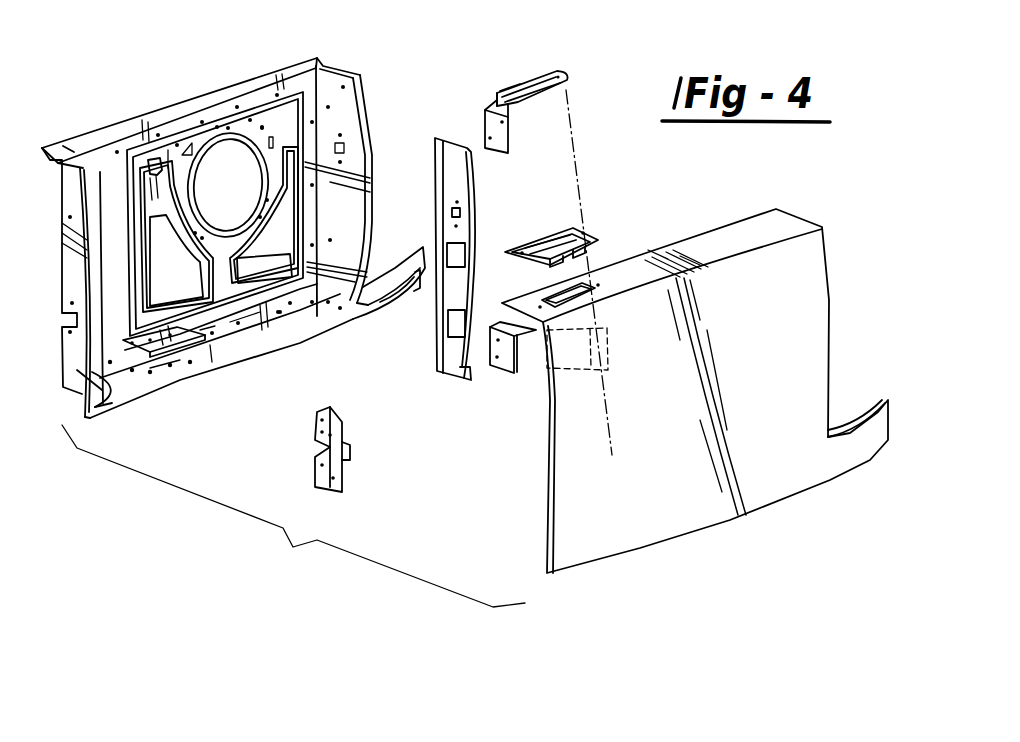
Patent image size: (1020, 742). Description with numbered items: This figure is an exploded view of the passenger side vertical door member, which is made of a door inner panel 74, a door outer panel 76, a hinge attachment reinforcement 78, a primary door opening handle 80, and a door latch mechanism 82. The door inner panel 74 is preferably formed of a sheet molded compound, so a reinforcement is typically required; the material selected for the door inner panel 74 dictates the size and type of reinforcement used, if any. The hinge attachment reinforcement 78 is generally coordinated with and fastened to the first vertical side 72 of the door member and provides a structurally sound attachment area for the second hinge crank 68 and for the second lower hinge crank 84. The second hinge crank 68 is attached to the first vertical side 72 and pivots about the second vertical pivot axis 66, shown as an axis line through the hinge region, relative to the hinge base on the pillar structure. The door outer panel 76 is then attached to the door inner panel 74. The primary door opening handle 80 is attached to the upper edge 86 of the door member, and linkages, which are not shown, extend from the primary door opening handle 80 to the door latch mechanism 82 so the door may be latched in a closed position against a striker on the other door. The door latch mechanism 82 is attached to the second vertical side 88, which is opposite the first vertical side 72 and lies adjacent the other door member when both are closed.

The second vertical pivot axis 66 is at (568, 123).
The second hinge crank 68 is at (538, 73).
The first vertical side 72 is at (333, 84).
The door inner panel 74 is at (263, 115).
The door outer panel 76 is at (610, 447).
The hinge attachment reinforcement 78 is at (453, 350).
The primary door opening handle 80 is at (535, 240).
The door latch mechanism 82 is at (347, 465).
The second lower hinge crank 84 is at (528, 350).
The upper edge 86 is at (670, 263).
The second vertical side 88 is at (97, 415).